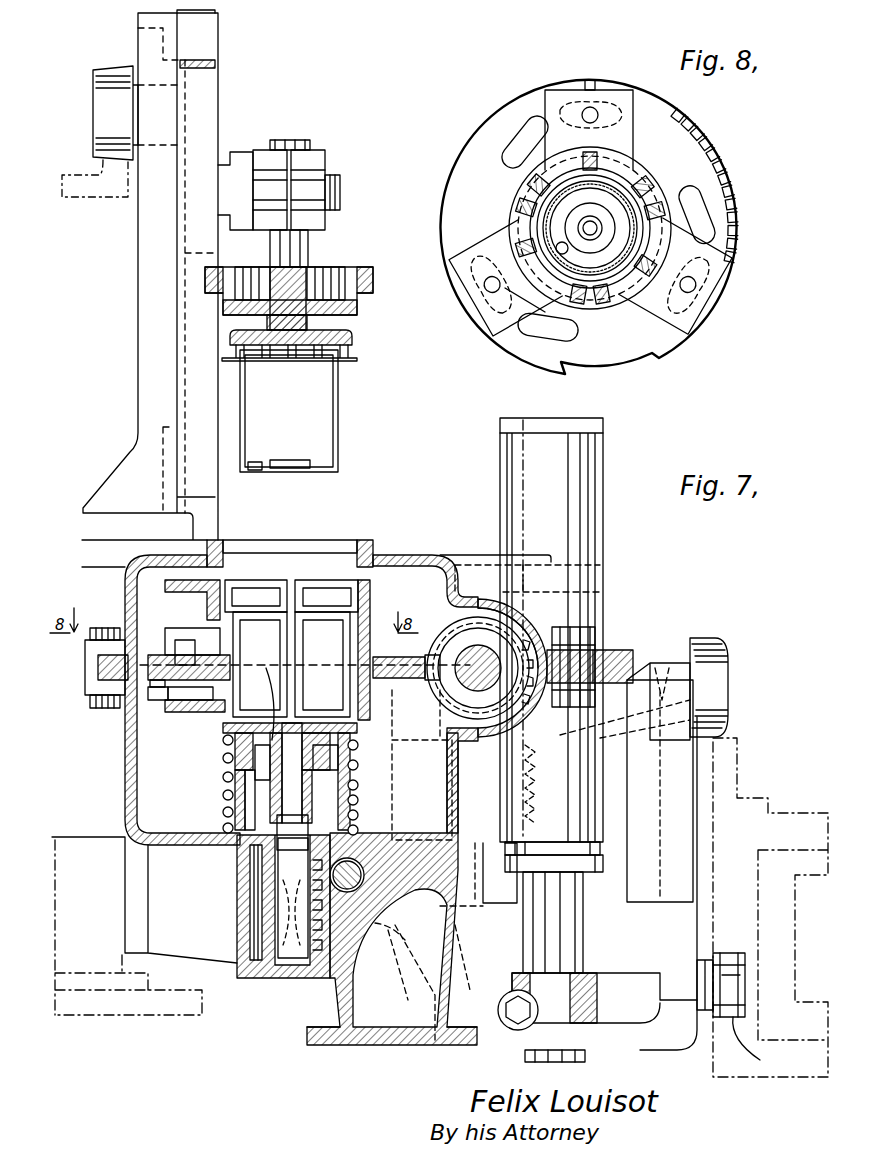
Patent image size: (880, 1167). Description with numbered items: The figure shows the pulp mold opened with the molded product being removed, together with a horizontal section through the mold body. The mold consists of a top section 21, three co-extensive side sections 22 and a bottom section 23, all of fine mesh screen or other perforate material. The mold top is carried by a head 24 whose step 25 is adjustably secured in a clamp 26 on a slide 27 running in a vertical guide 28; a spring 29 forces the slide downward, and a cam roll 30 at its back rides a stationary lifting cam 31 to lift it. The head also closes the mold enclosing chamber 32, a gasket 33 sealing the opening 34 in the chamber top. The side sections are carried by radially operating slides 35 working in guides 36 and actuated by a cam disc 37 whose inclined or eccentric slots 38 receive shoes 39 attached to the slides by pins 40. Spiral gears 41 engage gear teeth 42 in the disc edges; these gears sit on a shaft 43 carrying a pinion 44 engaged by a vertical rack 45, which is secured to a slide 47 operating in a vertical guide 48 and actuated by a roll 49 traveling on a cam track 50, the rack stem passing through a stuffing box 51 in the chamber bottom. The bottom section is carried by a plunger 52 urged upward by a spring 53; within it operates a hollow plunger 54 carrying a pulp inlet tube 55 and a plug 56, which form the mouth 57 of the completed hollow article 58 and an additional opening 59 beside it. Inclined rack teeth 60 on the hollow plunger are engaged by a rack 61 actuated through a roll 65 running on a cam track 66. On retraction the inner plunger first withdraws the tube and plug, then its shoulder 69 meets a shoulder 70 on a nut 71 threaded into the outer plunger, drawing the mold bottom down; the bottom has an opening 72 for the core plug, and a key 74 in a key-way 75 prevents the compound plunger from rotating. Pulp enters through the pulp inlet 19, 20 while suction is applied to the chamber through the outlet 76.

In FIG. 7, the pulp inlet 19 is at (305, 1012).
In FIG. 7, the pulp inlet passage 20 is at (293, 898).
In FIG. 7, the top section 21 is at (352, 338).
In FIG. 7, the side sections 22 is at (266, 718).
In FIG. 8, the side sections 22 is at (618, 178).
In FIG. 7, the bottom section 23 is at (322, 725).
In FIG. 7, the head 24 is at (308, 290).
In FIG. 7, the step 25 is at (308, 245).
In FIG. 7, the clamp 26 is at (315, 160).
In FIG. 7, the slide 27 is at (220, 140).
In FIG. 7, the vertical guide 28 is at (176, 270).
In FIG. 7, the spring 29 is at (217, 66).
In FIG. 7, the cam roll 30 is at (115, 113).
In FIG. 7, the lifting cam 31 is at (100, 166).
In FIG. 7, the mold enclosing chamber 32 is at (418, 555).
In FIG. 7, the gasket 33 is at (373, 292).
In FIG. 7, the opening 34 is at (348, 540).
In FIG. 7, the slides 35 is at (195, 712).
In FIG. 7, the guides 36 is at (176, 603).
In FIG. 7, the cam disc 37 is at (175, 668).
In FIG. 8, the cam disc 37 is at (610, 350).
In FIG. 7, the slots 38 is at (190, 700).
In FIG. 8, the slots 38 is at (547, 337).
In FIG. 7, the shoes 39 is at (162, 690).
In FIG. 8, the shoes 39 is at (505, 322).
In FIG. 7, the pins 40 is at (185, 640).
In FIG. 8, the pins 40 is at (492, 292).
In FIG. 7, the spiral gears 41 is at (472, 630).
In FIG. 7, the gear teeth 42 is at (440, 650).
In FIG. 8, the gear teeth 42 is at (735, 207).
In FIG. 7, the shaft 43 is at (492, 640).
In FIG. 7, the pinion 44 is at (440, 705).
In FIG. 7, the vertical rack 45 is at (537, 805).
In FIG. 7, the slide 47 is at (600, 975).
In FIG. 7, the vertical guide 48 is at (568, 856).
In FIG. 7, the roll 49 is at (725, 1000).
In FIG. 7, the cam track 50 is at (760, 1060).
In FIG. 7, the stuffing box 51 is at (540, 850).
In FIG. 7, the plunger 52 is at (357, 738).
In FIG. 7, the spring 53 is at (222, 778).
In FIG. 7, the hollow plunger 54 is at (360, 805).
In FIG. 7, the pulp inlet tube 55 is at (261, 696).
In FIG. 7, the plug 56 is at (232, 750).
In FIG. 7, the mouth 57 is at (292, 468).
In FIG. 7, the hollow article 58 is at (338, 422).
In FIG. 7, the opening 59 is at (255, 472).
In FIG. 7, the rack teeth 60 is at (312, 880).
In FIG. 7, the rack 61 is at (355, 860).
In FIG. 7, the roll 65 is at (728, 668).
In FIG. 7, the cam track 66 is at (730, 738).
In FIG. 7, the shoulder 69 is at (358, 770).
In FIG. 7, the shoulder 70 is at (350, 790).
In FIG. 7, the nut 71 is at (245, 800).
In FIG. 7, the opening 72 is at (260, 745).
In FIG. 7, the key 74 is at (250, 870).
In FIG. 7, the key-way 75 is at (292, 832).
In FIG. 7, the outlet 76 is at (428, 938).